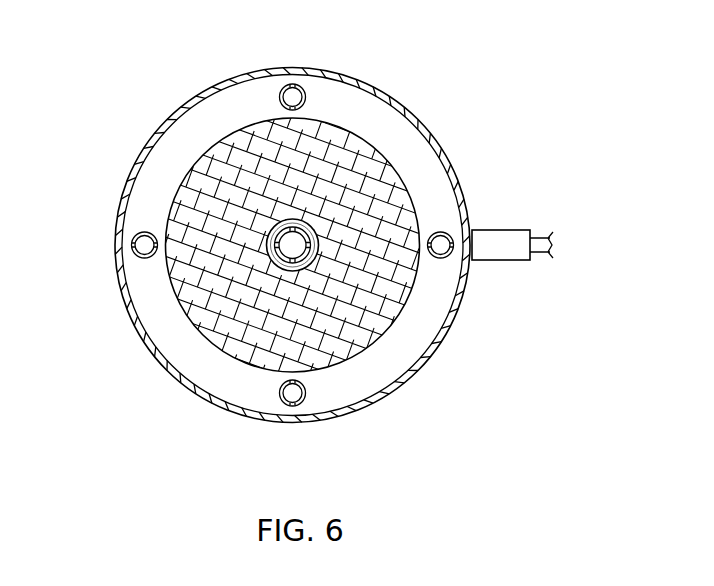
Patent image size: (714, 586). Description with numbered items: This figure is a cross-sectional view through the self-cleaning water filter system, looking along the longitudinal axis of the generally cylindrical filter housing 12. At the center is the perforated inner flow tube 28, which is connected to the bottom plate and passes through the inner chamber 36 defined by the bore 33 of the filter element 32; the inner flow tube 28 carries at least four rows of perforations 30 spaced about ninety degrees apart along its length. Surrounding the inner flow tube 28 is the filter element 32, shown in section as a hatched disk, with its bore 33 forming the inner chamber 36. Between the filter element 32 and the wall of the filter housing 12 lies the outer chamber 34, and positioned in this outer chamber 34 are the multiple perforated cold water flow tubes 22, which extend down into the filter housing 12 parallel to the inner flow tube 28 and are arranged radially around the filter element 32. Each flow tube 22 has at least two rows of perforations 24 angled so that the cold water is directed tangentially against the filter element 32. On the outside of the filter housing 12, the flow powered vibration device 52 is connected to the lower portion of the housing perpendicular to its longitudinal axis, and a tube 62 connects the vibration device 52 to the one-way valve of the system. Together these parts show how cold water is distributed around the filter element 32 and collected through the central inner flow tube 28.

The filter housing 12 is at (405, 106).
The perforated flow tubes 22 is at (296, 84).
The perforations 24 is at (281, 93).
The inner flow tube 28 is at (318, 268).
The perforations 30 is at (320, 252).
The filter element 32 is at (178, 191).
The bore 33 is at (273, 223).
The outer chamber 34 is at (160, 322).
The inner chamber 36 is at (284, 270).
The flow powered vibration device 52 is at (500, 262).
The tube 62 is at (543, 229).